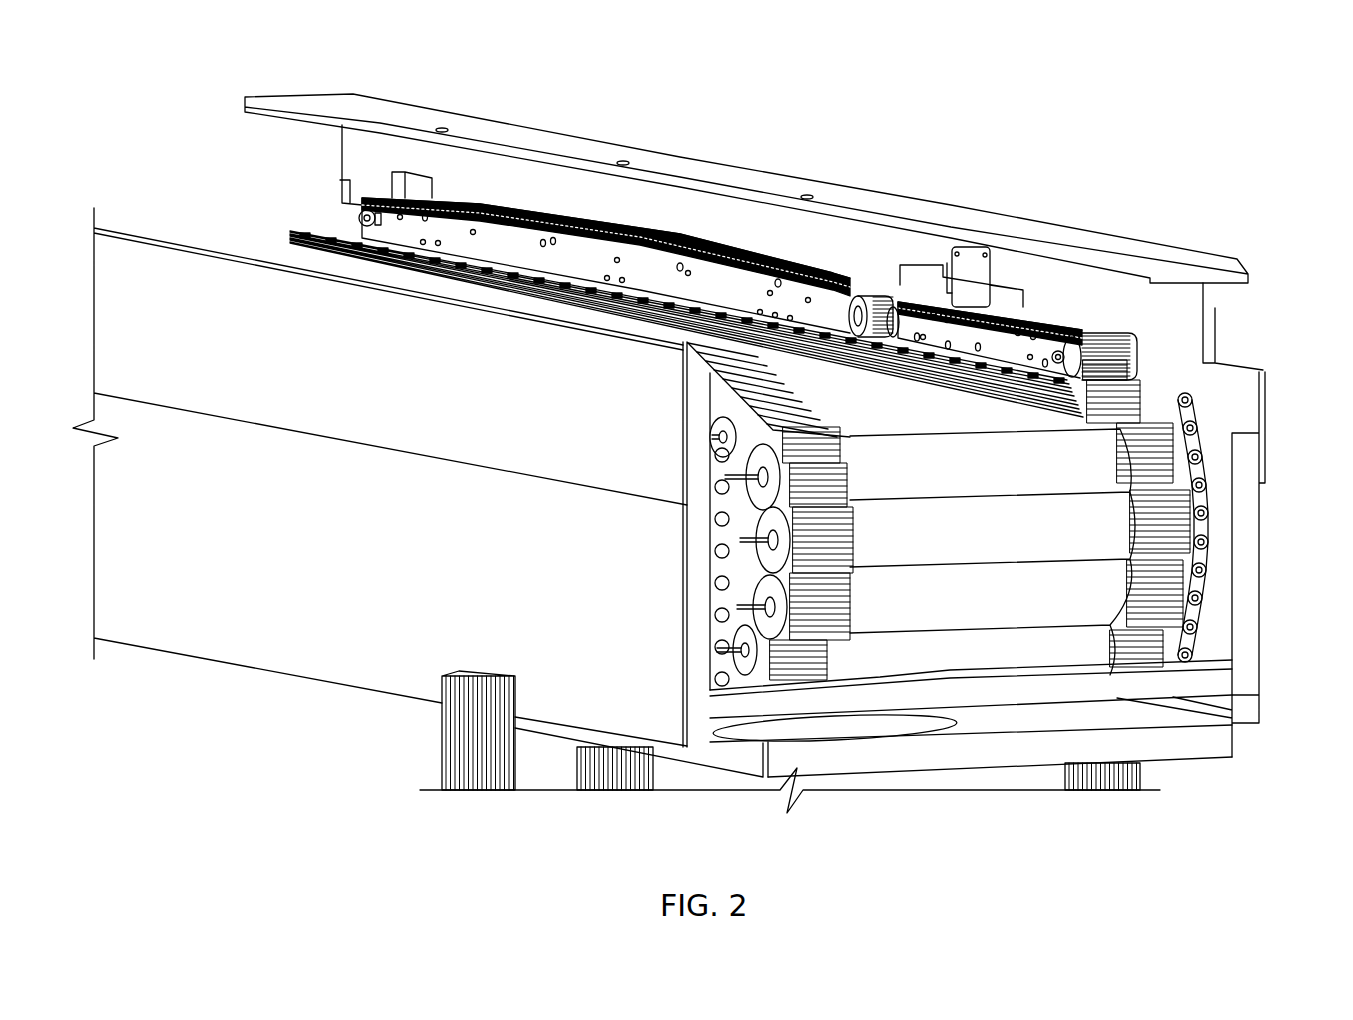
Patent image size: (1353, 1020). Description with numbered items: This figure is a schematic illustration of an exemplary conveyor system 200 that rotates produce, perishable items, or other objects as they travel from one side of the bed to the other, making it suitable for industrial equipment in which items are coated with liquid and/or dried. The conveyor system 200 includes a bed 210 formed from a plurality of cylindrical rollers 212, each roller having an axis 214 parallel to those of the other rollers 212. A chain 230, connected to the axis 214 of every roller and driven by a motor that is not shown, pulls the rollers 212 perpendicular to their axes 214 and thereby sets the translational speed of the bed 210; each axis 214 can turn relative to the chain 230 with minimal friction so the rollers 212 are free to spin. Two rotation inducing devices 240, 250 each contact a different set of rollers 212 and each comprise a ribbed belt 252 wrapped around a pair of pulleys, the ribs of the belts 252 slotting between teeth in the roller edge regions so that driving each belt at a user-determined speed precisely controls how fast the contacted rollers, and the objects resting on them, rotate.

The conveyor system 200 is at (1165, 67).
The bed 210 is at (725, 330).
The cylindrical rollers 212 is at (970, 592).
The axis 214 is at (740, 545).
The chain 230 is at (1220, 568).
The rotation inducing device 240 is at (497, 243).
The rotation inducing device 250 is at (922, 293).
The ribbed belt 252 is at (622, 228).